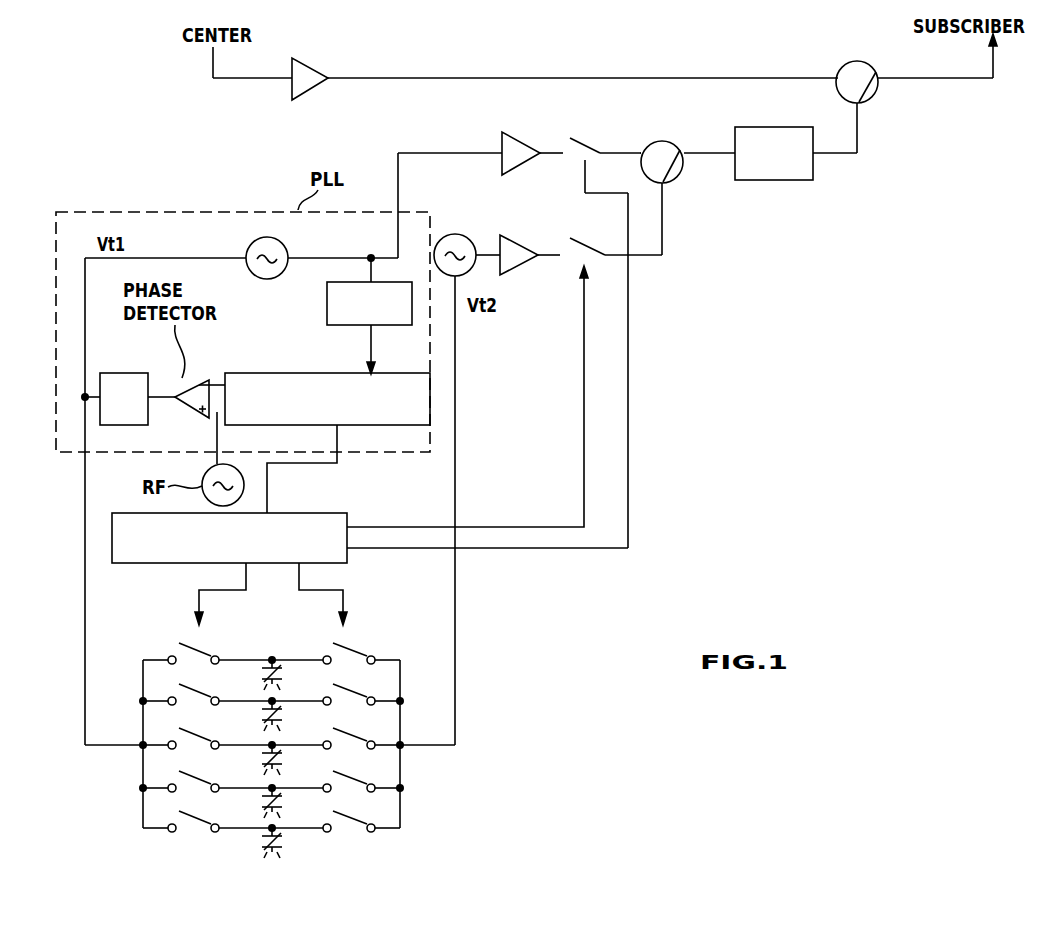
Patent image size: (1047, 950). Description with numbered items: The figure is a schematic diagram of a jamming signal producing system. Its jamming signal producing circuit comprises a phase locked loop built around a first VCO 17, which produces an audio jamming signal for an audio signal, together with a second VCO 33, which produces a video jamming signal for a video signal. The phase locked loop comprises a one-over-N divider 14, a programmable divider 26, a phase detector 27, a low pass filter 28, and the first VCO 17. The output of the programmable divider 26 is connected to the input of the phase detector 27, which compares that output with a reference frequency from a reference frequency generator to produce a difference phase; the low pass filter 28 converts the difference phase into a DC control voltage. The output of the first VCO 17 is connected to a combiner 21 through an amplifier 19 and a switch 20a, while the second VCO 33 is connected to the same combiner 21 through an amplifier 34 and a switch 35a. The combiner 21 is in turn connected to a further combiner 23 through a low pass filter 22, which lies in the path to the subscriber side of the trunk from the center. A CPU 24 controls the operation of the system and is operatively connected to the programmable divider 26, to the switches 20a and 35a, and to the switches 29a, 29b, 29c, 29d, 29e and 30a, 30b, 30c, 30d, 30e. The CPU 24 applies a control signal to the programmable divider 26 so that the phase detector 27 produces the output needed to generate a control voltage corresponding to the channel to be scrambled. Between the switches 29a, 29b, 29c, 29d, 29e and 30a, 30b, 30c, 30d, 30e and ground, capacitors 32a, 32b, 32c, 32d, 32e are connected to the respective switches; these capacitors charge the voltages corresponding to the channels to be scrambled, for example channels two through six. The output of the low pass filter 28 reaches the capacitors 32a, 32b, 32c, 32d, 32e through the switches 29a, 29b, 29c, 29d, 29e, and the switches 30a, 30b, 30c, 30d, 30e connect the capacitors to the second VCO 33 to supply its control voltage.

The 1/N divider 14 is at (326, 305).
The first VCO 17 is at (248, 244).
The amplifier 19 is at (500, 138).
The switch 20a is at (582, 136).
The combiner 21 is at (658, 143).
The low pass filter 22 is at (762, 127).
The combiner 23 is at (877, 96).
The CPU 24 is at (340, 512).
The programmable divider 26 is at (286, 372).
The phase detector 27 is at (210, 375).
The low pass filter 28 is at (130, 372).
The switch 29a is at (191, 648).
The switch 29b is at (191, 689).
The switch 29c is at (191, 733).
The switch 29d is at (191, 776).
The switch 29e is at (191, 818).
The switch 30a is at (344, 648).
The switch 30b is at (341, 689).
The switch 30c is at (341, 733).
The switch 30d is at (339, 777).
The switch 30e is at (350, 808).
The capacitor 32a is at (276, 658).
The capacitor 32b is at (279, 705).
The capacitor 32c is at (279, 753).
The capacitor 32d is at (279, 793).
The capacitor 32e is at (284, 836).
The second VCO 33 is at (448, 235).
The amplifier 34 is at (522, 222).
The switch 35a is at (588, 238).